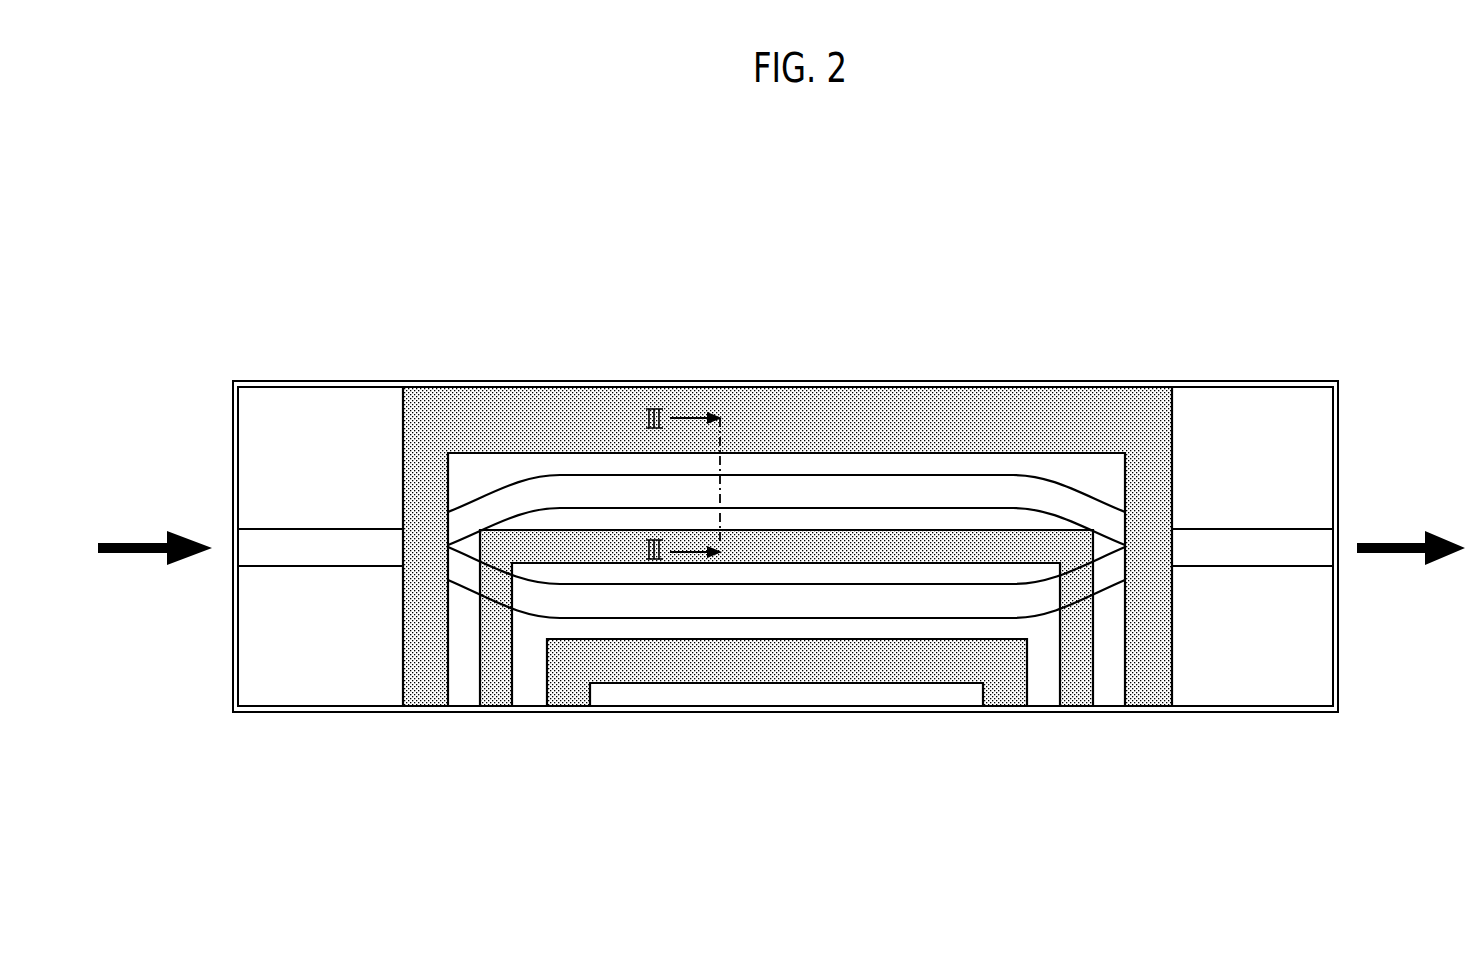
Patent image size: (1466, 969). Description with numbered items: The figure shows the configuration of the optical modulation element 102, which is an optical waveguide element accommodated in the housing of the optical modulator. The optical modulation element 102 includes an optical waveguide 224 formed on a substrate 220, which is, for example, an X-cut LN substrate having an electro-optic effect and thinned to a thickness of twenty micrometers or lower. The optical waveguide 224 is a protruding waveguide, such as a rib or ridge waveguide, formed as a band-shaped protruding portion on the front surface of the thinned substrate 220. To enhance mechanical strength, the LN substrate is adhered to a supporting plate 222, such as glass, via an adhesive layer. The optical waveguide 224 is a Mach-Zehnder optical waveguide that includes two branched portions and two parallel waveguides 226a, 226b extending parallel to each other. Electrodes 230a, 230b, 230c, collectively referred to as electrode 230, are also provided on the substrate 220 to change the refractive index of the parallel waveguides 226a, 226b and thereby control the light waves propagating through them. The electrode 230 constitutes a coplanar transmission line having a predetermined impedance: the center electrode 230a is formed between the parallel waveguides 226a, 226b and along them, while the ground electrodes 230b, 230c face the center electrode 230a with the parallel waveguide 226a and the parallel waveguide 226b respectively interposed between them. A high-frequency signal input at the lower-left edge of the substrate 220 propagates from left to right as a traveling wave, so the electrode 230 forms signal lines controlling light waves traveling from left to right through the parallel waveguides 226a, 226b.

The optical modulation element 102 is at (185, 211).
The substrate 220 is at (302, 403).
The supporting plate 222 is at (387, 382).
The optical waveguide 224 is at (317, 547).
The parallel waveguide 226a is at (829, 492).
The parallel waveguide 226b is at (897, 605).
The electrode 230 is at (774, 667).
The center electrode 230a is at (495, 694).
The ground electrode 230b is at (425, 696).
The ground electrode 230c is at (787, 731).